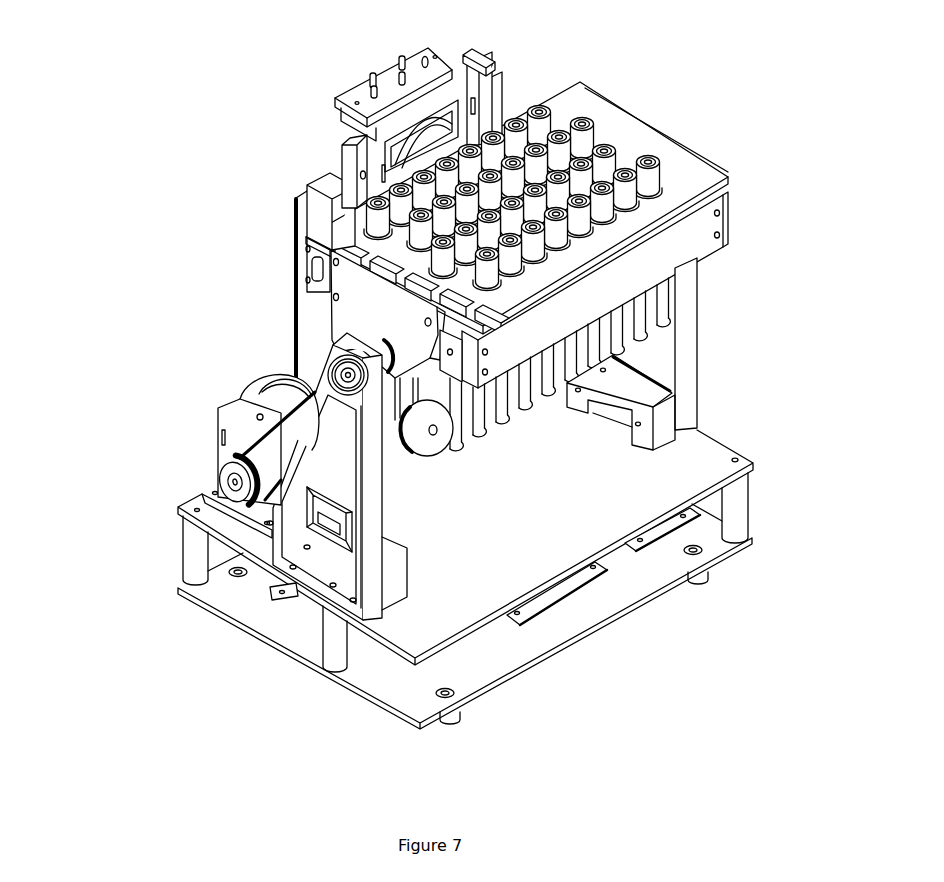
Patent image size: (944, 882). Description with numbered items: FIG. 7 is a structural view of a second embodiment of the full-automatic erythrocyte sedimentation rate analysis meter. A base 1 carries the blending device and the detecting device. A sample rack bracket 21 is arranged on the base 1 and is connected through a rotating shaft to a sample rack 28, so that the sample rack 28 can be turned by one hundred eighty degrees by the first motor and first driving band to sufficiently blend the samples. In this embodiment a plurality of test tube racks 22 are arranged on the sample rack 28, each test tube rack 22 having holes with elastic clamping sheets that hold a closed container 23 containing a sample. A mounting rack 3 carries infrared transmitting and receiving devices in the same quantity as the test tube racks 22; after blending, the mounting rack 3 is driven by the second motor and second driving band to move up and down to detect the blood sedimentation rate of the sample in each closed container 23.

The base 1 is at (527, 542).
The mounting rack 3 is at (613, 287).
The sample rack bracket 21 is at (333, 460).
The test tube rack 22 is at (650, 193).
The closed container 23 is at (543, 107).
The sample rack 28 is at (378, 315).